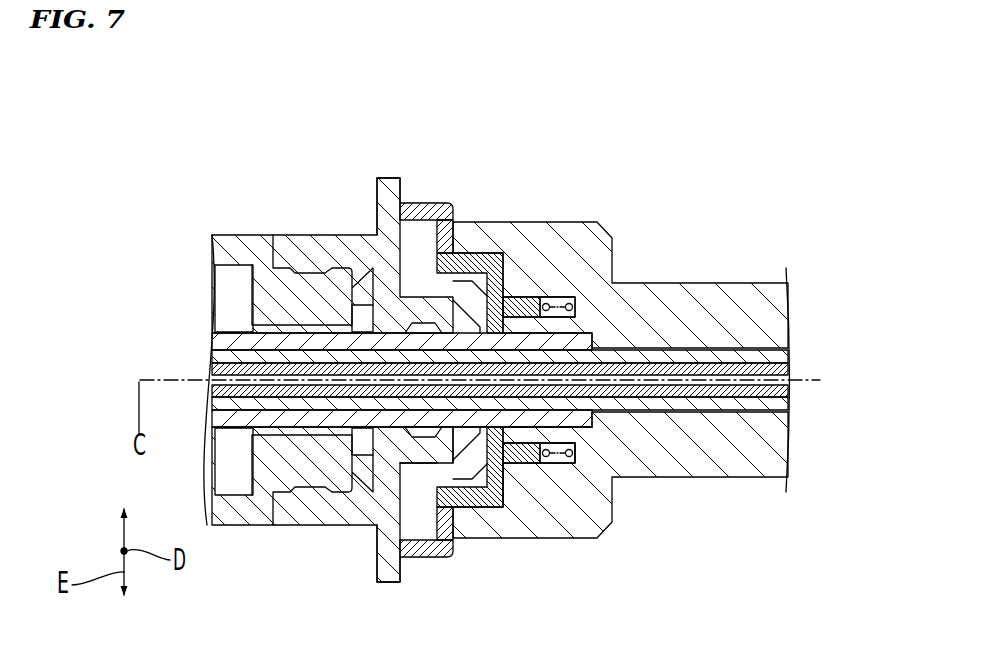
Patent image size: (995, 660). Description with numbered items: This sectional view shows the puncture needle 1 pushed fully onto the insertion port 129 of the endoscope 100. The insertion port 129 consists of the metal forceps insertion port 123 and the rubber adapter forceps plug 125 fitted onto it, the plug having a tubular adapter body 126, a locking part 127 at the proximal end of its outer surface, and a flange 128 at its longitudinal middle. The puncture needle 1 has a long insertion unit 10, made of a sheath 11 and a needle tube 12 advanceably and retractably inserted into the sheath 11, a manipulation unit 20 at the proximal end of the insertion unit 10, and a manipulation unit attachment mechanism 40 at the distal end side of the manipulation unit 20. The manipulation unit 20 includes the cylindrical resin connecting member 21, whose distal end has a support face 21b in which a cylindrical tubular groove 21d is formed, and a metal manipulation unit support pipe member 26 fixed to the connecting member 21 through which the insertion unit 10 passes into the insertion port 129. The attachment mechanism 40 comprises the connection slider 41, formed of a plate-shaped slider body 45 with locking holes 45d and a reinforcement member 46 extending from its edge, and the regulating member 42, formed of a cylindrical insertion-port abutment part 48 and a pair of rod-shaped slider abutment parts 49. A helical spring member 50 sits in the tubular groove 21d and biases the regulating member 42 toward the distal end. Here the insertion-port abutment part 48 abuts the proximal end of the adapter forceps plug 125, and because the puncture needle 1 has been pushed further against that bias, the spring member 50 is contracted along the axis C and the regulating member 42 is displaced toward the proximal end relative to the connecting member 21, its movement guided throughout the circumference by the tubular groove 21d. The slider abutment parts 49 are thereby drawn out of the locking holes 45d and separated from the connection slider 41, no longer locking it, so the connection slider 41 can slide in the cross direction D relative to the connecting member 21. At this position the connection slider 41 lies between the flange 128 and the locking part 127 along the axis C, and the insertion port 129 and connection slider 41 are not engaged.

The puncture needle 1 is at (763, 112).
The insertion unit 10 is at (768, 233).
The sheath 11 is at (671, 350).
The needle tube 12 is at (726, 364).
The manipulation unit 20 is at (788, 198).
The connecting member 21 is at (724, 462).
The support face 21b is at (488, 497).
The tubular groove 21d is at (562, 460).
The manipulation unit support pipe member 26 is at (545, 425).
The manipulation unit attachment mechanism 40 is at (485, 130).
The connection slider 41 is at (458, 100).
The regulating member 42 is at (590, 171).
The slider body 45 is at (446, 222).
The locking holes 45d is at (458, 276).
The reinforcement member 46 is at (413, 203).
The insertion-port abutment part 48 is at (508, 275).
The slider abutment parts 49 is at (478, 262).
The spring member 50 is at (563, 297).
The endoscope 100 is at (153, 128).
The forceps insertion port 123 is at (240, 250).
The adapter forceps plug 125 is at (378, 216).
The adapter body 126 is at (418, 457).
The locking part 127 is at (462, 475).
The flange 128 is at (378, 573).
The insertion port 129 is at (315, 120).